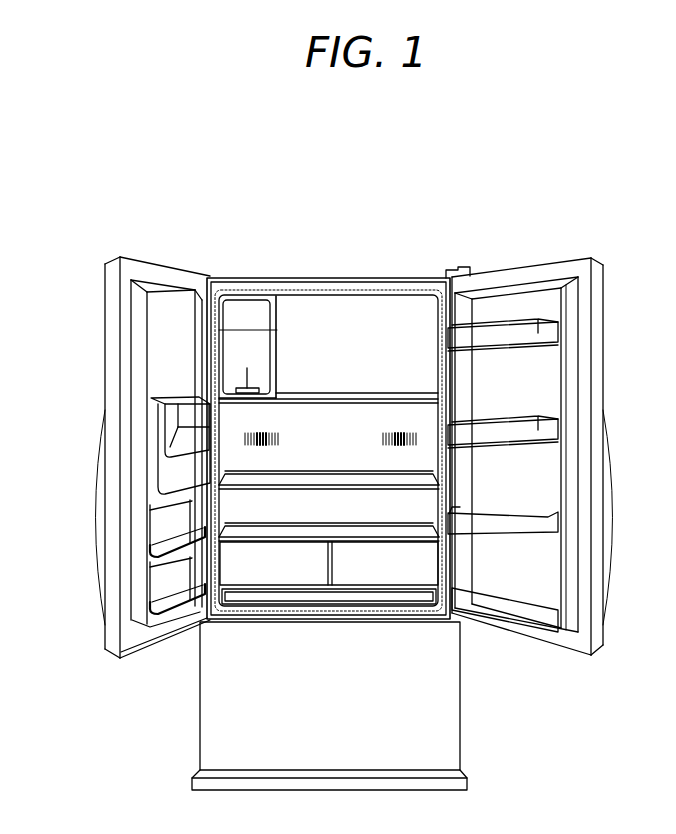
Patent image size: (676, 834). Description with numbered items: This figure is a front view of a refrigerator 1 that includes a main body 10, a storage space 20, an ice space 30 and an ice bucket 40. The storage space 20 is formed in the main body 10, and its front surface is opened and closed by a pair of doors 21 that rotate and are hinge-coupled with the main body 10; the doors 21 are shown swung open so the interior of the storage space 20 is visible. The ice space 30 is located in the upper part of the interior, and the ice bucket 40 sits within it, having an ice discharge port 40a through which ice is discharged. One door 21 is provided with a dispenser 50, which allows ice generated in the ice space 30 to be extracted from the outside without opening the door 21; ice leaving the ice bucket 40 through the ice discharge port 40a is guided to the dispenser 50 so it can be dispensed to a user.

The refrigerator 1 is at (414, 252).
The main body 10 is at (362, 286).
The storage space 20 is at (347, 448).
The door 21 is at (112, 305).
The ice space 30 is at (278, 347).
The ice bucket 40 is at (259, 345).
The ice discharge port 40a is at (247, 370).
The dispenser 50 is at (156, 431).